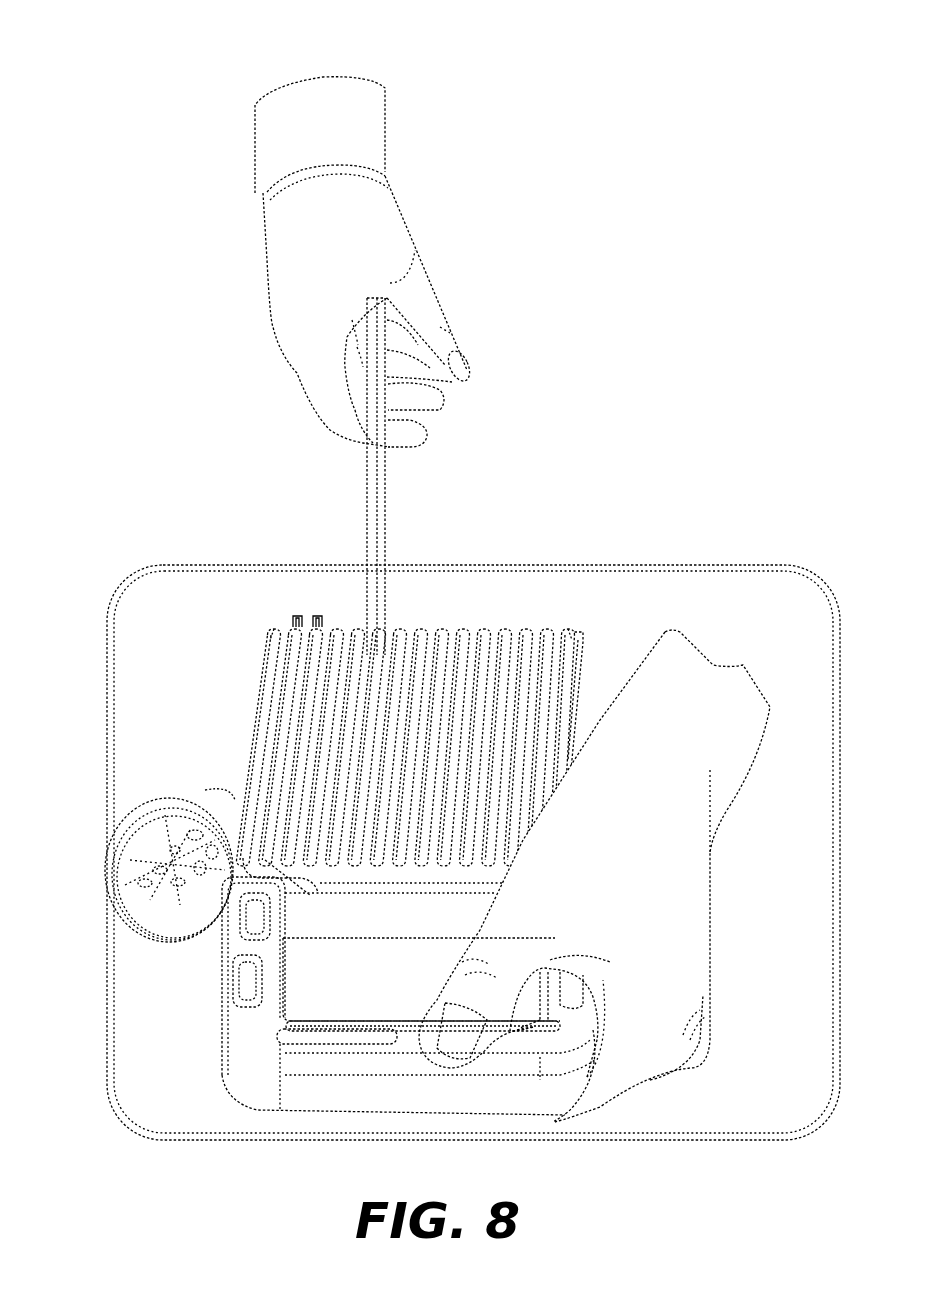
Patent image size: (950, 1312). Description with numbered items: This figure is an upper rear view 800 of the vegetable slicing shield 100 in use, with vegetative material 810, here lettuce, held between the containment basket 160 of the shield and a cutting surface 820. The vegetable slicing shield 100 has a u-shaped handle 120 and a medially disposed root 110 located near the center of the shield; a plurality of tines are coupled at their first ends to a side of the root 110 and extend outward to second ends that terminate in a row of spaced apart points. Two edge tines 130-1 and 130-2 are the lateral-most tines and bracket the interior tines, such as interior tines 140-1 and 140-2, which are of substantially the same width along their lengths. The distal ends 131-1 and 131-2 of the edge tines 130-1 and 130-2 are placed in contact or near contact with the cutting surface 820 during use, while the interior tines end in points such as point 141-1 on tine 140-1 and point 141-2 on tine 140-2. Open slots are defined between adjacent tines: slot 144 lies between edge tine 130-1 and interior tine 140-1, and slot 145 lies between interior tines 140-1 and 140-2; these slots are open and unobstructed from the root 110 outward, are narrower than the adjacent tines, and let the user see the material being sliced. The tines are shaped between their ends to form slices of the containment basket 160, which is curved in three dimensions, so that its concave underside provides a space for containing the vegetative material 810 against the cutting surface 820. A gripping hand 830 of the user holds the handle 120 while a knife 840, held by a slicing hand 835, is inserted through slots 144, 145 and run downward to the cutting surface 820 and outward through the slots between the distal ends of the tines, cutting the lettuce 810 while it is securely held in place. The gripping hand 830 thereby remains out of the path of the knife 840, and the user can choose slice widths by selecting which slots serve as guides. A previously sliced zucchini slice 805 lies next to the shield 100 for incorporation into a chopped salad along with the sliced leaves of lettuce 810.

The usage scenario / system 800 is at (135, 36).
The slicing hand 835 is at (280, 303).
The knife 840 is at (388, 477).
The point of interior tine 141-2 is at (332, 627).
The slot 145 is at (317, 622).
The point of interior tine 141-1 is at (303, 621).
The slot 144 is at (295, 616).
The distal end of edge tine 131-1 is at (287, 627).
The interior tine 140-1 is at (297, 673).
The edge tine 130-1 is at (272, 712).
The interior tine 140-2 is at (312, 760).
The vegetative material 810 is at (222, 800).
The zucchini slice 805 is at (107, 870).
The containment basket 160 is at (406, 695).
The distal end of edge tine 131-2 is at (560, 630).
The edge tine 130-2 is at (560, 668).
The cutting surface 820 is at (785, 578).
The gripping hand 830 is at (735, 745).
The root 110 is at (400, 928).
The u-shaped handle 120 is at (228, 1072).
The vegetable slicing shield 100 is at (168, 1105).